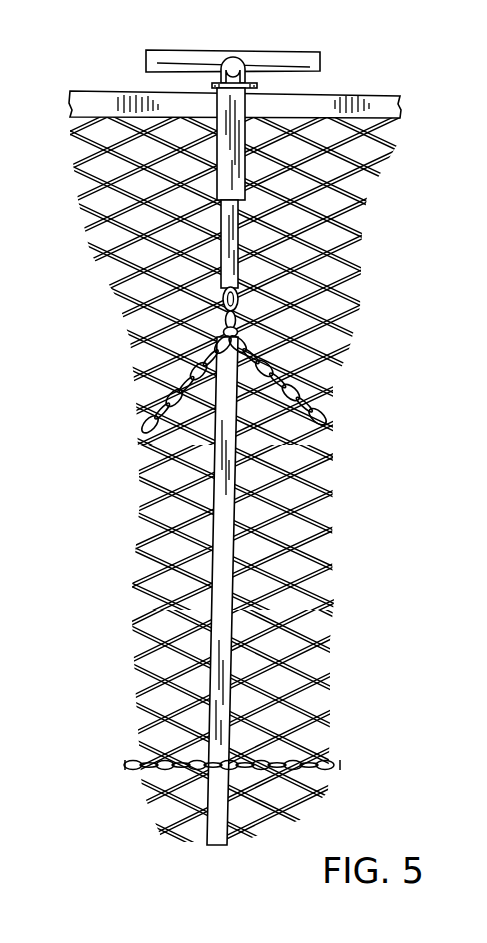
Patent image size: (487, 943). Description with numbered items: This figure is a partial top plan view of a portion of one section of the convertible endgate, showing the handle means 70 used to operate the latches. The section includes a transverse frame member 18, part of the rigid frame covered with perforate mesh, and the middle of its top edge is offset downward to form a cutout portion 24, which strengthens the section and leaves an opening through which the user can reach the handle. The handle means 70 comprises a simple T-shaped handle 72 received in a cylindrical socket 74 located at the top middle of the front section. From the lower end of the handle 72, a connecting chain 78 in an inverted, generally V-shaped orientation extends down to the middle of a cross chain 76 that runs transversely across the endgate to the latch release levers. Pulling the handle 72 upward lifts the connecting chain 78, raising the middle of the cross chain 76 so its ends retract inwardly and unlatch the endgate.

The transverse frame member 18 is at (375, 100).
The cutout portion 24 is at (234, 471).
The handle means 70 is at (254, 44).
The T-shaped handle 72 is at (300, 50).
The cylindrical socket 74 is at (240, 100).
The cross chain 76 is at (292, 760).
The connecting chain 78 is at (322, 410).